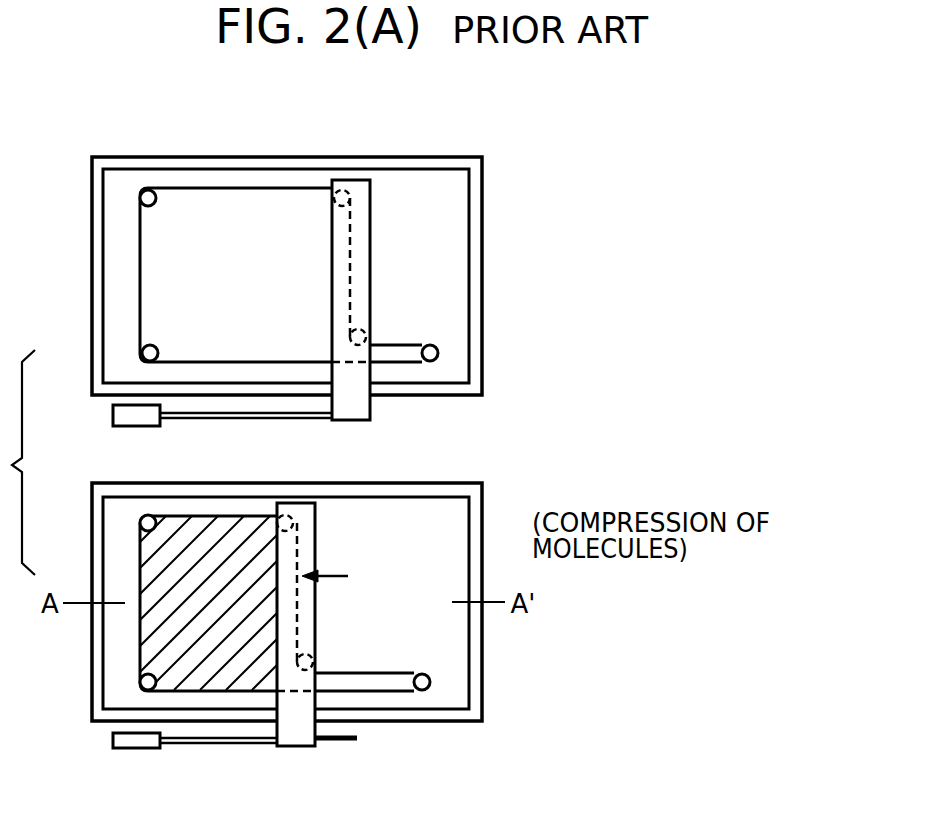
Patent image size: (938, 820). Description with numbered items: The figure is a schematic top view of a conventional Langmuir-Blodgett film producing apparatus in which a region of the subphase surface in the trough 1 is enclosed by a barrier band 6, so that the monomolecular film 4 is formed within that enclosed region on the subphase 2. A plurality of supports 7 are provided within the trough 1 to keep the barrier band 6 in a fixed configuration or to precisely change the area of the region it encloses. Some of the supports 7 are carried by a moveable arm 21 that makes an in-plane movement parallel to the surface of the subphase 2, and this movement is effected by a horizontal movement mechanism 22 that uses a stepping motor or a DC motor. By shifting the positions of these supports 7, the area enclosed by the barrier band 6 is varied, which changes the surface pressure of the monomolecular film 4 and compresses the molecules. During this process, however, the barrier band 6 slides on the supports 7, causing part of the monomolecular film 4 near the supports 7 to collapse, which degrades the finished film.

The trough 1 is at (484, 240).
The water surface (subphase) 2 is at (430, 195).
The monomolecular film 4 is at (155, 637).
The barrier band 6 is at (282, 190).
The supports 7 is at (148, 514).
The moveable arm 21 is at (352, 181).
The horizontal movement mechanism 22 is at (126, 413).